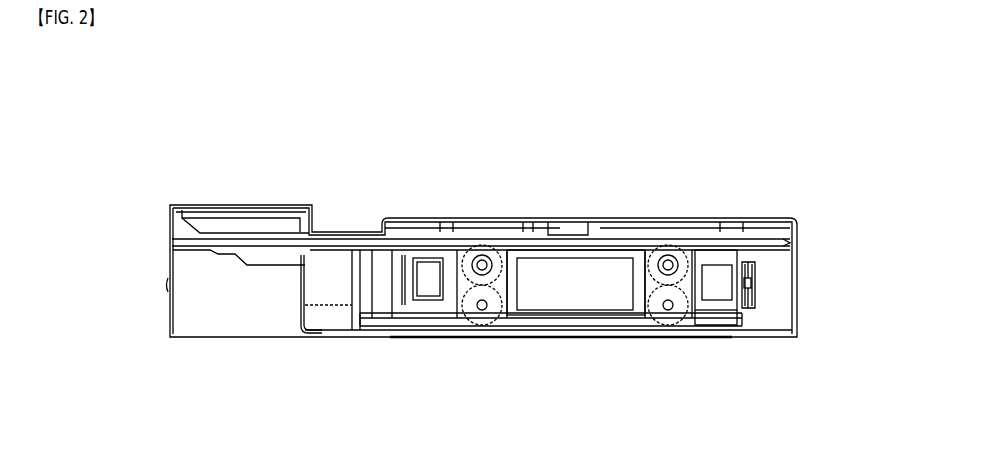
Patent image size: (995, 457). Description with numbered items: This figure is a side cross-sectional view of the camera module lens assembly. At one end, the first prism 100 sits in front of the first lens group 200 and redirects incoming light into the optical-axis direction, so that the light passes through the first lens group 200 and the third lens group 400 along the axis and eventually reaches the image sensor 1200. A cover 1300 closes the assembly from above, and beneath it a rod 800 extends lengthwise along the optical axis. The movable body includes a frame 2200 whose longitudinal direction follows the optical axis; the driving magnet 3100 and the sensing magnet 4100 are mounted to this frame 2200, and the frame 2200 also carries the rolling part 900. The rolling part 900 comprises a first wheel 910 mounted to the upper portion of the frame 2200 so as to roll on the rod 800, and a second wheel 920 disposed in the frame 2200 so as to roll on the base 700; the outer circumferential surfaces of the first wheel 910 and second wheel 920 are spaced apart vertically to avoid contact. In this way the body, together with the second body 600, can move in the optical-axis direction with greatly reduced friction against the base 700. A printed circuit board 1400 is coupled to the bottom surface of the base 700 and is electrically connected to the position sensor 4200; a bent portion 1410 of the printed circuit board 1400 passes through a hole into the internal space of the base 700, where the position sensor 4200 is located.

The first prism 100 is at (243, 232).
The first lens group 200 is at (337, 290).
The third lens group 400 is at (423, 283).
The second body 600 is at (512, 305).
The base 700 is at (222, 300).
The rod 800 is at (790, 243).
The rolling part 900 is at (421, 392).
The first wheel 910 is at (482, 268).
The second wheel 920 is at (482, 307).
The image sensor 1200 is at (648, 228).
The cover 1300 is at (422, 228).
The printed circuit board 1400 is at (590, 330).
The bent portion 1410 is at (300, 290).
The frame 2200 is at (551, 353).
The driving magnet 3100 is at (575, 278).
The sensing magnet 4100 is at (718, 290).
The position sensor 4200 is at (755, 283).